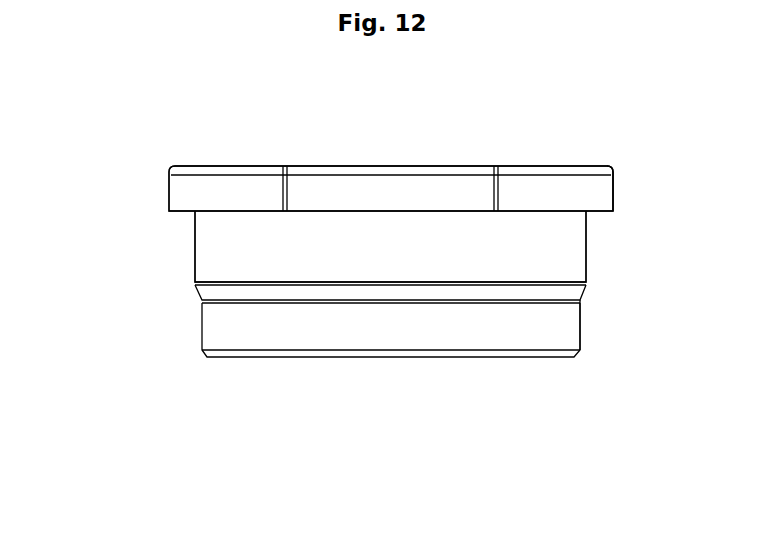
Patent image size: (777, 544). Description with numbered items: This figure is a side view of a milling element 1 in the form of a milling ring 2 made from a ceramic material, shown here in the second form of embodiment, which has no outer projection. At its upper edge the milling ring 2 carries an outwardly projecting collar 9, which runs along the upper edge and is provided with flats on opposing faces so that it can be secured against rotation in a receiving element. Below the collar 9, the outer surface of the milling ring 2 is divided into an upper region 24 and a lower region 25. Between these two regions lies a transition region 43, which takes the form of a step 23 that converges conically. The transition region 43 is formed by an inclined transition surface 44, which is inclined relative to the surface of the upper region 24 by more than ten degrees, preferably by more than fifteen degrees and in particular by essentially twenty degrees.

The milling element 1 is at (199, 148).
The milling ring 2 is at (528, 190).
The collar 9 is at (594, 190).
The step 23 is at (537, 293).
The upper region 24 is at (230, 247).
The lower region 25 is at (233, 330).
The transition region 43 is at (568, 297).
The transition surface 44 is at (285, 293).